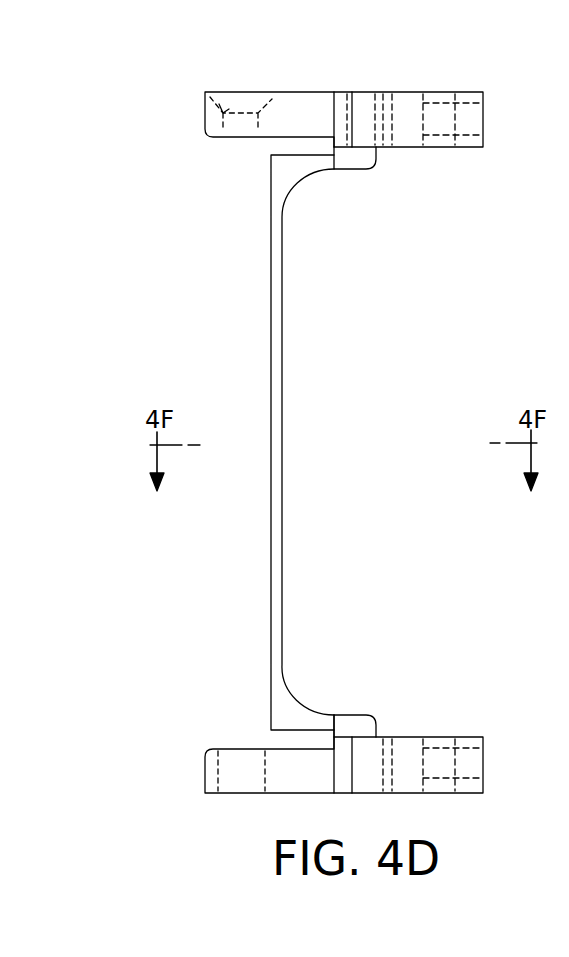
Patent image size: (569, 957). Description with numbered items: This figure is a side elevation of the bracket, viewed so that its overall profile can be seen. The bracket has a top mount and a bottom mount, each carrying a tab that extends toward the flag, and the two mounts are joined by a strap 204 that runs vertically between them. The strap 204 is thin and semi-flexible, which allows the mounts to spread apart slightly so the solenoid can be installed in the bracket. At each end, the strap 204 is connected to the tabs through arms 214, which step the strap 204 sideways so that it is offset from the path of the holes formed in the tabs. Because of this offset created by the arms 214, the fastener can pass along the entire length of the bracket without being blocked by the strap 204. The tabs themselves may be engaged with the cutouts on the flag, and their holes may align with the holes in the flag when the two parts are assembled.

The strap 204 is at (276, 357).
The arm 214 is at (356, 157).